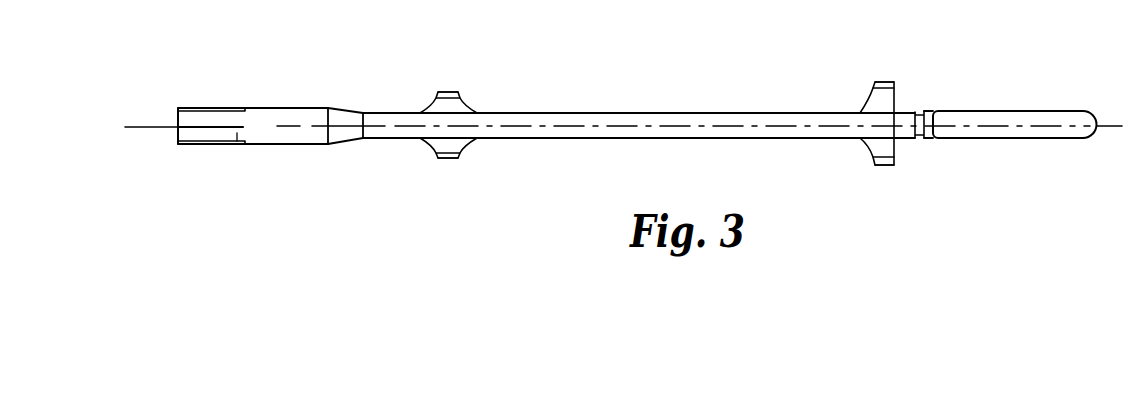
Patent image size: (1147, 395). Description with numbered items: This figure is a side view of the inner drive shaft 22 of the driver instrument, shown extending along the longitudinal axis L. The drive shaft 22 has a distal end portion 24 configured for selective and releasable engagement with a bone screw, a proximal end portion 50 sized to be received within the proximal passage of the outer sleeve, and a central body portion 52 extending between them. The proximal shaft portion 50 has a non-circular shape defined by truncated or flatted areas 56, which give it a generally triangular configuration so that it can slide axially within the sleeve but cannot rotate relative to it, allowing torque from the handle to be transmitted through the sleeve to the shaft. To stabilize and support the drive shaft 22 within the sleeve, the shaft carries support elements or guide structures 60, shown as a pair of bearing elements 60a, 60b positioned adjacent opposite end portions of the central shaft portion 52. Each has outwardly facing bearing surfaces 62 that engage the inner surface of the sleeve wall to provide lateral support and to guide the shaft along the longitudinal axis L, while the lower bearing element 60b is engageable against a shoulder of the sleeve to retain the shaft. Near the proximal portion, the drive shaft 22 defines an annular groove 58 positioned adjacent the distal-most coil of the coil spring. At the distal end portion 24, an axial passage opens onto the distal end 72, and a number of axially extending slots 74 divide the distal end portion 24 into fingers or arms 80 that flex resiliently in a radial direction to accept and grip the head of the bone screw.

The longitudinal axis L is at (133, 128).
The drive shaft 22 is at (641, 97).
The distal end portion 24 is at (237, 87).
The proximal end portion 50 is at (1033, 142).
The central body portion 52 is at (647, 137).
The flatted area 56 is at (1002, 118).
The annular groove 58 is at (917, 140).
The support elements or guide structures 60 is at (445, 177).
The upper bearing element 60a is at (868, 152).
The lower bearing element 60b is at (437, 145).
The bearing surface 62 is at (447, 92).
The distal end 72 is at (180, 135).
The slot 74 is at (223, 128).
The finger 80 is at (222, 115).